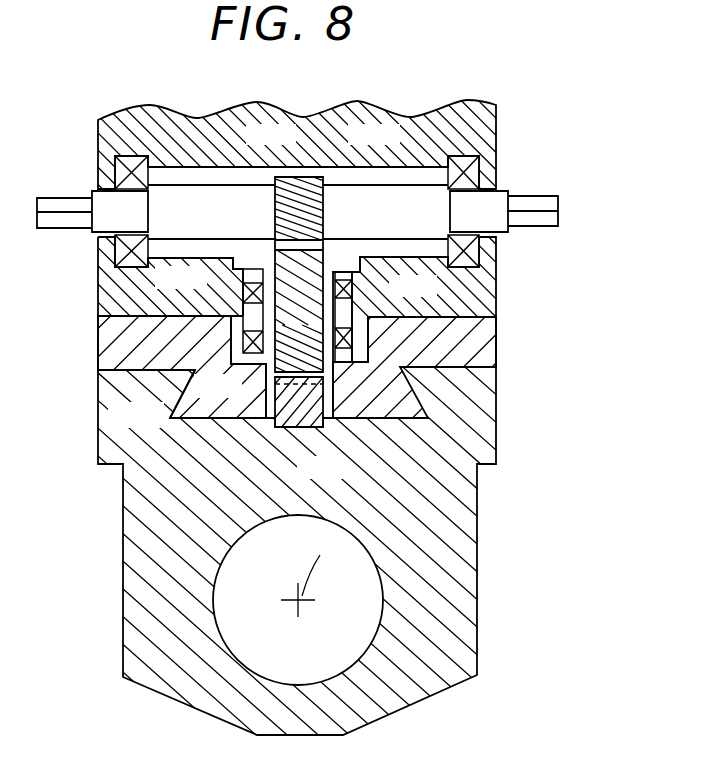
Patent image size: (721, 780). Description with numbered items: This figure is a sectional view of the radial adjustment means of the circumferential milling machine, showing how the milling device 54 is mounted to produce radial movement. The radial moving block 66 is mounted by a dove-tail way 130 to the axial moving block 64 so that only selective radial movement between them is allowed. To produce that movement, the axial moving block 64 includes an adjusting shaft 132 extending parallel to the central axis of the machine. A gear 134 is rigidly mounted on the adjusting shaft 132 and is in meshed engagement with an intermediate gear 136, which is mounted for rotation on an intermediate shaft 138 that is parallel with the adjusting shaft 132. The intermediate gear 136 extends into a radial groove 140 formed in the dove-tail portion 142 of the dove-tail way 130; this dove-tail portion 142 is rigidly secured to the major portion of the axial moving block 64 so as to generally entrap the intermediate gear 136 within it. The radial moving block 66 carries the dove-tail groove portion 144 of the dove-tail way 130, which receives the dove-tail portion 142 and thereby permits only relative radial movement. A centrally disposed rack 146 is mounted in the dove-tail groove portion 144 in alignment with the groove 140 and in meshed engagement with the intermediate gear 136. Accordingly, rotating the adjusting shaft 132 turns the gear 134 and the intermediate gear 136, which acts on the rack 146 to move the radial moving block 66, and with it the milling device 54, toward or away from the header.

The milling device 54 is at (344, 486).
The axial moving block 64 is at (495, 118).
The radial moving block 66 is at (497, 426).
The dove-tail way 130 is at (437, 390).
The adjusting shaft 132 is at (390, 200).
The gear 134 is at (298, 177).
The intermediate gear 136 is at (232, 262).
The intermediate shaft 138 is at (343, 315).
The radial groove 140 is at (265, 388).
The dove-tail portion 142 is at (117, 338).
The dove-tail groove portion 144 is at (193, 414).
The rack 146 is at (301, 408).